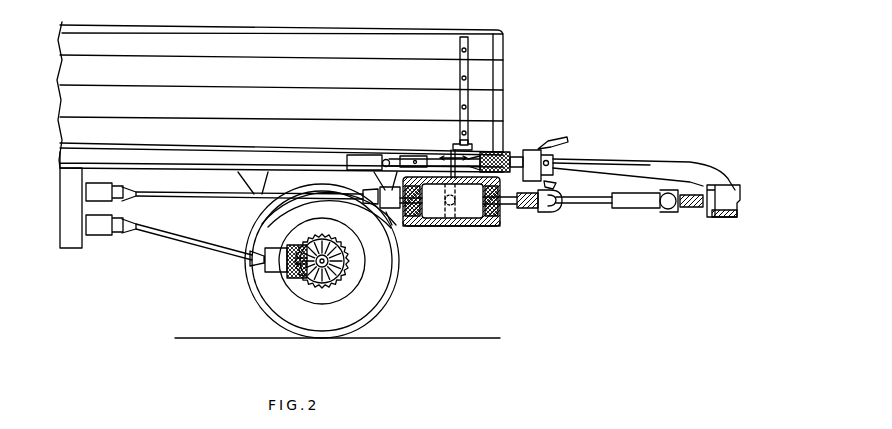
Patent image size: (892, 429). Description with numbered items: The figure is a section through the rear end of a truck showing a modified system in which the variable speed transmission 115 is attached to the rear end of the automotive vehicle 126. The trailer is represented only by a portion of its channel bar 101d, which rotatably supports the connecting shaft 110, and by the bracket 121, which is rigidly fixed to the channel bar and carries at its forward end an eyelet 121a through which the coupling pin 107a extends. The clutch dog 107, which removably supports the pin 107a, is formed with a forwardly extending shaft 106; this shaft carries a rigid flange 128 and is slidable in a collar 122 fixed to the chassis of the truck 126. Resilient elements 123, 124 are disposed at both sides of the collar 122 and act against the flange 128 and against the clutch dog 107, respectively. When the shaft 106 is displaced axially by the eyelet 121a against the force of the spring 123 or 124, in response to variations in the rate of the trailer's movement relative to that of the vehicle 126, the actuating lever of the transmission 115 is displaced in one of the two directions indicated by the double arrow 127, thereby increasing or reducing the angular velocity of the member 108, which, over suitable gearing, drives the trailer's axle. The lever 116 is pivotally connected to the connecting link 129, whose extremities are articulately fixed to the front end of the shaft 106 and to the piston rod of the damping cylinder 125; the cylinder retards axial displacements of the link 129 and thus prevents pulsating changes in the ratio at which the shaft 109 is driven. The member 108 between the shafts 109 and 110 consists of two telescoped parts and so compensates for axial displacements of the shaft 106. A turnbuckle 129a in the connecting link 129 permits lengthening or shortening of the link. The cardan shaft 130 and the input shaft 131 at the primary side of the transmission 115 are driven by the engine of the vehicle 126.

The channel bar 101d is at (718, 222).
The forwardly extending shaft 106 is at (493, 218).
The clutch dog 107 is at (559, 155).
The coupling pin 107a is at (554, 173).
The member 108 is at (621, 205).
The shaft 109 is at (492, 224).
The connecting shaft 110 is at (697, 207).
The variable speed transmission 115 is at (450, 213).
The lever 116 is at (438, 212).
The bracket 121 is at (697, 165).
The eyelet 121a is at (601, 154).
The collar 122 is at (503, 178).
The resilient element 123 is at (505, 150).
The resilient element 124 is at (516, 155).
The damping cylinder 125 is at (353, 157).
The automotive vehicle 126 is at (202, 157).
The double arrow 127 is at (453, 150).
The rigid flange 128 is at (493, 140).
The connecting link 129 is at (400, 140).
The turnbuckle 129a is at (418, 158).
The cardan shaft 130 is at (183, 200).
The input shaft 131 is at (393, 226).